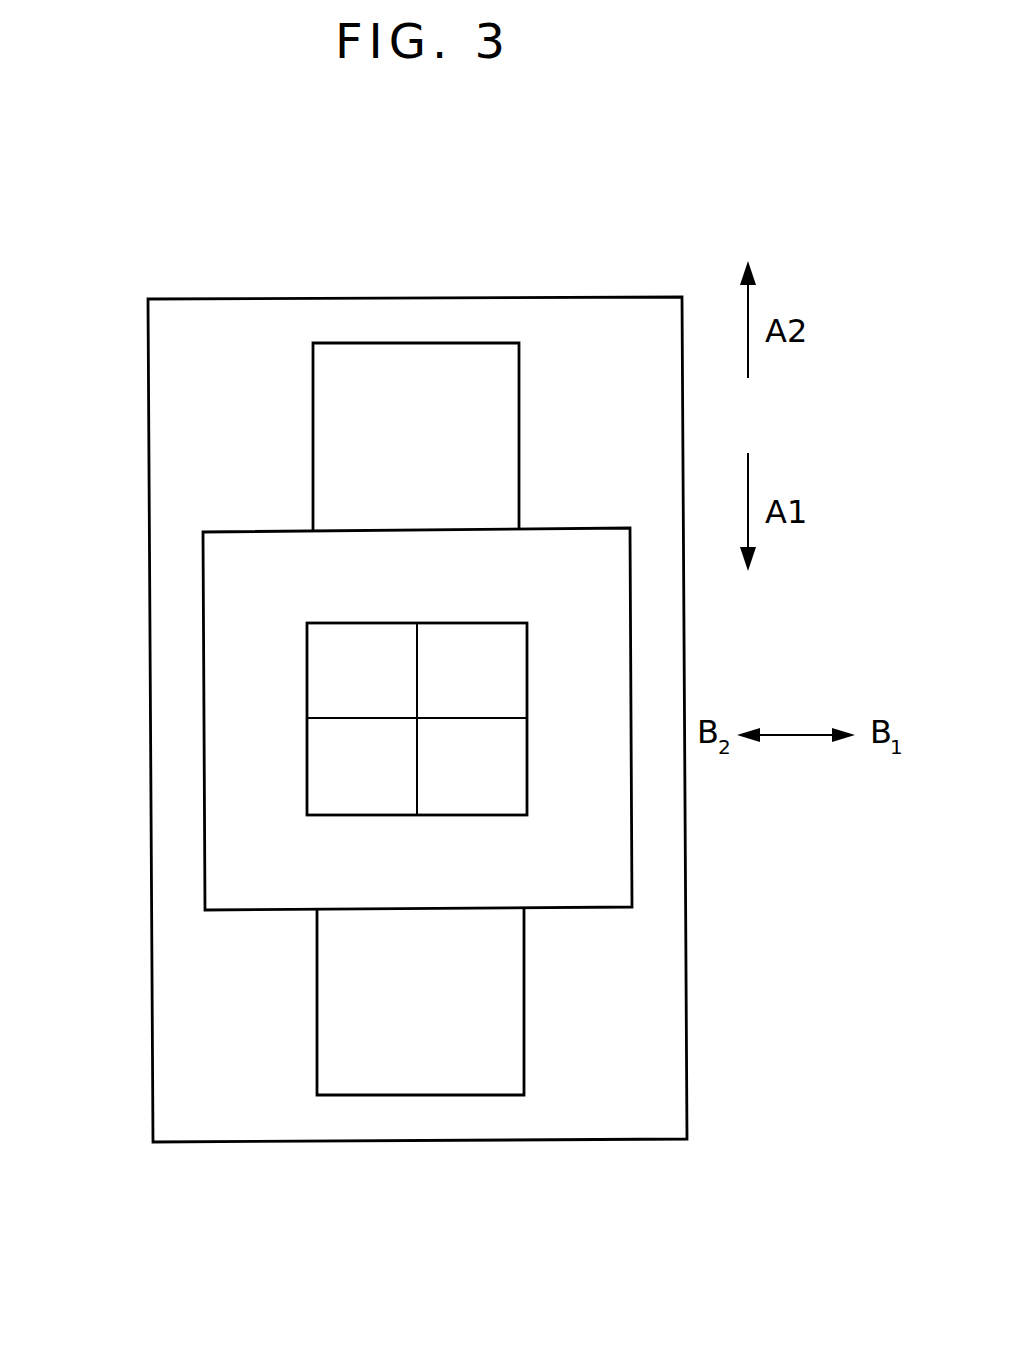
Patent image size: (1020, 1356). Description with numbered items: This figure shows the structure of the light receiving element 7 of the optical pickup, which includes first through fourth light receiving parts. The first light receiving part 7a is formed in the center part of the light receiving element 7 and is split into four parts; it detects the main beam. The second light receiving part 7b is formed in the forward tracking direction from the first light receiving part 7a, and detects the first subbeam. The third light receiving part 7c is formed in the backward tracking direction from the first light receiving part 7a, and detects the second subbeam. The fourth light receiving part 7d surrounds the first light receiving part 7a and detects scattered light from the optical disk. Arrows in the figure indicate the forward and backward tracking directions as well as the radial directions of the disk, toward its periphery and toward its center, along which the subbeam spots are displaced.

The light receiving element 7 is at (221, 292).
The first light receiving part 7a is at (472, 683).
The second light receiving part 7b is at (435, 380).
The third light receiving part 7c is at (420, 1060).
The fourth light receiving part 7d is at (238, 783).